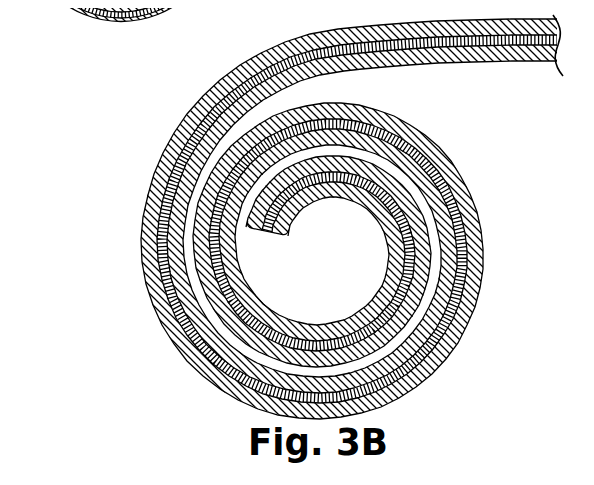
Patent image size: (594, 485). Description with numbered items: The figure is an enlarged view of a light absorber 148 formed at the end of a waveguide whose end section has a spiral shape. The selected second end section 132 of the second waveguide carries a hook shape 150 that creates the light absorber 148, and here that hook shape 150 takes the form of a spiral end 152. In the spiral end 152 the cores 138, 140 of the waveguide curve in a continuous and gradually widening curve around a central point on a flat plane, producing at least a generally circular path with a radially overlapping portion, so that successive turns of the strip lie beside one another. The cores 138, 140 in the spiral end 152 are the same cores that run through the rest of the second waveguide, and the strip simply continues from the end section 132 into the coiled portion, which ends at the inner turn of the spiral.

The second end section 132 is at (303, 217).
The core 138 is at (467, 214).
The core 140 is at (458, 258).
The light absorber 148 is at (297, 228).
The hook shape 150 is at (185, 363).
The spiral end 152 is at (445, 353).